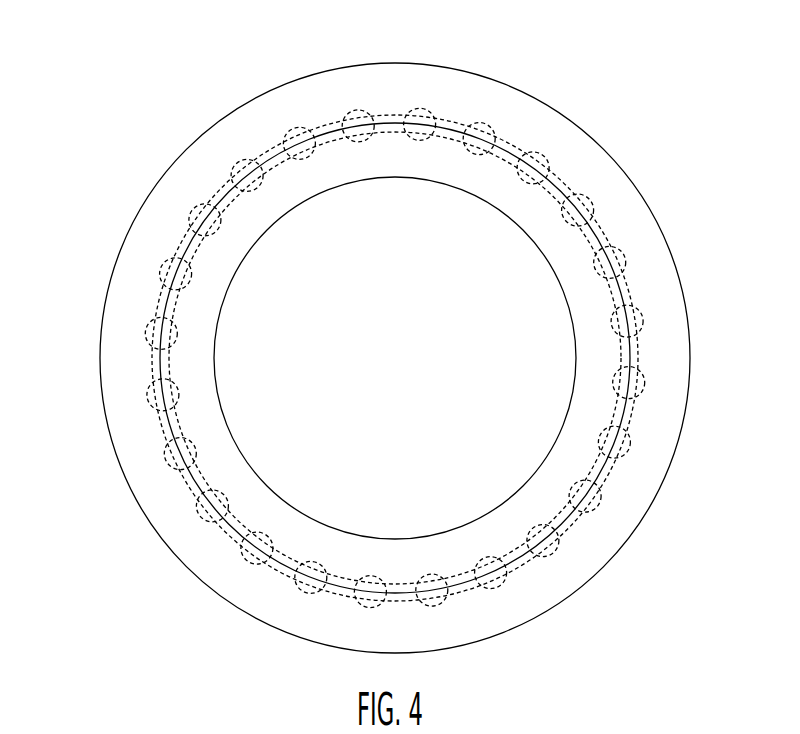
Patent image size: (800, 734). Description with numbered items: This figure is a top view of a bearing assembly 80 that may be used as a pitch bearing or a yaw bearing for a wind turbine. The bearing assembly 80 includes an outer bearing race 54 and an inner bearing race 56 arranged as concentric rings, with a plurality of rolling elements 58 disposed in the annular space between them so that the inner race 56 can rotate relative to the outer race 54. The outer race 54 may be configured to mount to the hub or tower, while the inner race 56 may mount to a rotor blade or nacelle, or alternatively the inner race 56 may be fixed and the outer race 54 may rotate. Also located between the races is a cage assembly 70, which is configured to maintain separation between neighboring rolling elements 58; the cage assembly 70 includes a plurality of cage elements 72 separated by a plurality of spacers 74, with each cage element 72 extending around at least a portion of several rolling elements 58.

The bearing assembly 80 is at (106, 73).
The outer bearing race 54 is at (662, 305).
The inner bearing race 56 is at (592, 367).
The rolling elements 58 is at (640, 387).
The cage assembly 70 is at (180, 241).
The cage elements 72 is at (397, 133).
The spacers 74 is at (217, 187).